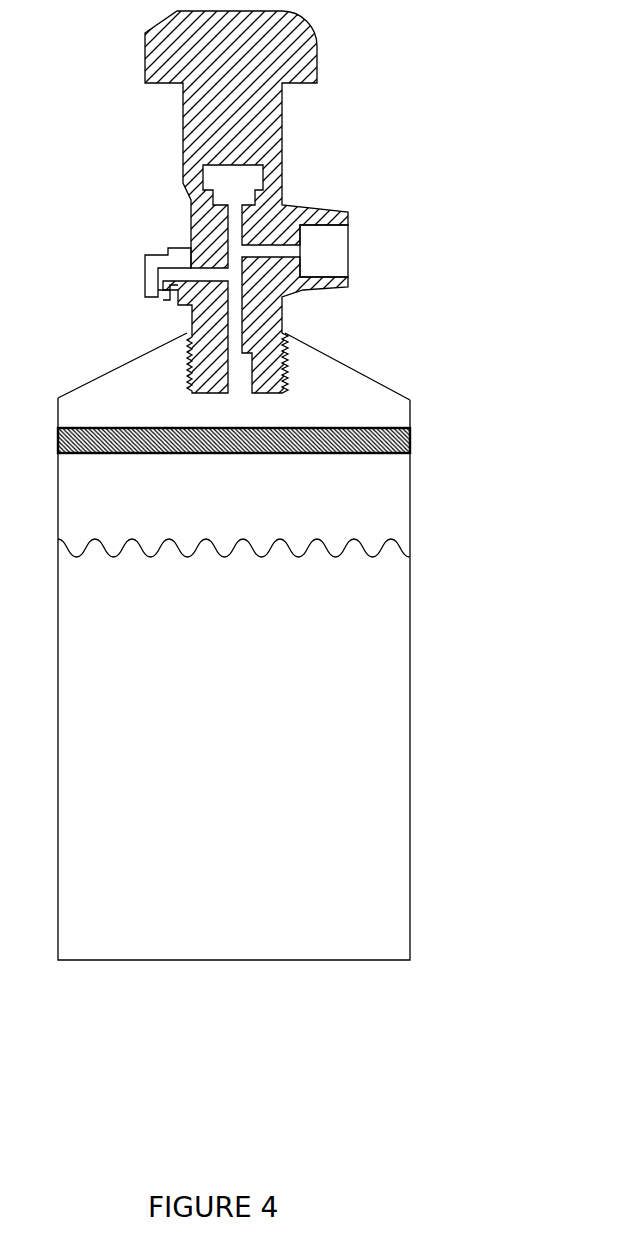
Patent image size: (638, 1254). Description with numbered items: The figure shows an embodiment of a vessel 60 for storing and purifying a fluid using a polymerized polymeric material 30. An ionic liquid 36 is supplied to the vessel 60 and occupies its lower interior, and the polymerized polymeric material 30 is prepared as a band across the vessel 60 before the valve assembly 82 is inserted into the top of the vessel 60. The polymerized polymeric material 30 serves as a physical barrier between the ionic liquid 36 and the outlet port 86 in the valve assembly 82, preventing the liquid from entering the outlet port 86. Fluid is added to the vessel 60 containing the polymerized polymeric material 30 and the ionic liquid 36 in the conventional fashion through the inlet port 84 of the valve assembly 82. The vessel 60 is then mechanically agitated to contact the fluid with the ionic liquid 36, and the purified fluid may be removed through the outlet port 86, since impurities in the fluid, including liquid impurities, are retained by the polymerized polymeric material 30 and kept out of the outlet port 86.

The valve assembly 82 is at (282, 125).
The outlet port 86 is at (348, 237).
The inlet port 84 is at (158, 296).
The polymerized polymeric material 30 is at (340, 427).
The vessel 60 is at (410, 480).
The ionic liquid 36 is at (363, 707).